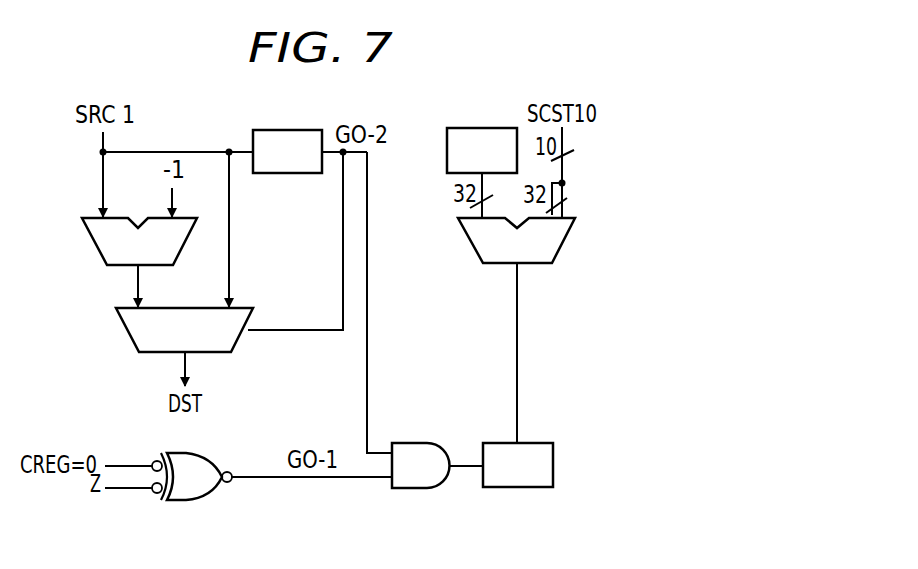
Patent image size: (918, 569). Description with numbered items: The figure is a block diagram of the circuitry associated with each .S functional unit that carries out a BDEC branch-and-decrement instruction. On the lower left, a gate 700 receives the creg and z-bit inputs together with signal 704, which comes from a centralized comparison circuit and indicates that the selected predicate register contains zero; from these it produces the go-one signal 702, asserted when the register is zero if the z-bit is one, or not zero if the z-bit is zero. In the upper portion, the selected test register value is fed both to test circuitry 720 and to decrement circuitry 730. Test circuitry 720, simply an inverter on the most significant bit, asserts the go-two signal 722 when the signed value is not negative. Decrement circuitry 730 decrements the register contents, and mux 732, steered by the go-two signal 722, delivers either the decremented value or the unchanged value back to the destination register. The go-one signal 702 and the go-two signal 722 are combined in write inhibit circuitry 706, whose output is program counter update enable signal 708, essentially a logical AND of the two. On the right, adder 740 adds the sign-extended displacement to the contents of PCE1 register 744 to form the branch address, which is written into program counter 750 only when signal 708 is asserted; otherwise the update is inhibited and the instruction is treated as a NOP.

The NOR gate 700 is at (180, 502).
The GO-1 signal 702 is at (312, 478).
The signal 704 is at (128, 465).
The write inhibit circuitry 706 is at (408, 443).
The program counter update enable signal 708 is at (465, 468).
The test circuitry 720 is at (285, 129).
The GO-2 signal 722 is at (343, 252).
The decrement circuitry 730 is at (92, 243).
The mux 732 is at (125, 331).
The adder 740 is at (567, 242).
The PCE1 register 744 is at (482, 128).
The program counter 750 is at (553, 462).